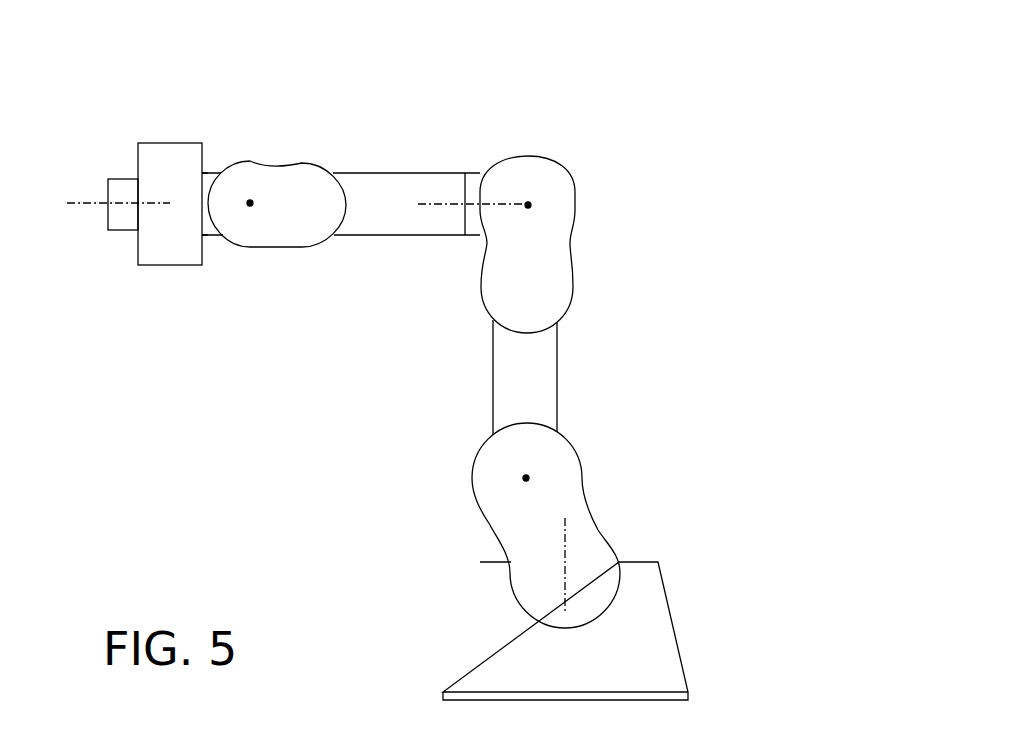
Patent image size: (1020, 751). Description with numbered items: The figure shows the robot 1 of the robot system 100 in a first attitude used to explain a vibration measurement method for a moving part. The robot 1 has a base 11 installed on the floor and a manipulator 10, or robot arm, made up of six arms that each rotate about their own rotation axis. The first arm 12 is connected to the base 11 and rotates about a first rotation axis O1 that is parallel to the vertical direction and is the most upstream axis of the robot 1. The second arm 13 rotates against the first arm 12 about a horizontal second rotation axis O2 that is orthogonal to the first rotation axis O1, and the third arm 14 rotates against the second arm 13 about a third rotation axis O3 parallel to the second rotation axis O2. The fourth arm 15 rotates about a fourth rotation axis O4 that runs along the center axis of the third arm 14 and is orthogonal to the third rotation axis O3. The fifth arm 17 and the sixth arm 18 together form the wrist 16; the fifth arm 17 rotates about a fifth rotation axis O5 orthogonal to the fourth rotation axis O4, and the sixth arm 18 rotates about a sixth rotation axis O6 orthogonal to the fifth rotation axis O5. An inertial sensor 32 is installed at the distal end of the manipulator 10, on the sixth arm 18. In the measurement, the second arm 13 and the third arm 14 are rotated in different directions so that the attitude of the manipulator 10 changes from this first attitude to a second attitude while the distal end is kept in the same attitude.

The robot system 100 is at (721, 167).
The robot 1 is at (709, 241).
The manipulator 10 is at (688, 304).
The base 11 is at (676, 618).
The first arm 12 is at (588, 498).
The second arm 13 is at (578, 277).
The third arm 14 is at (478, 170).
The fourth arm 15 is at (304, 248).
The wrist 16 is at (172, 67).
The fifth arm 17 is at (214, 166).
The sixth arm 18 is at (172, 140).
The inertial sensor 32 is at (122, 230).
The first rotation axis O1 is at (565, 538).
The second rotation axis O2 is at (526, 478).
The third rotation axis O3 is at (528, 205).
The fourth rotation axis O4 is at (433, 204).
The fifth rotation axis O5 is at (250, 205).
The sixth rotation axis O6 is at (93, 202).